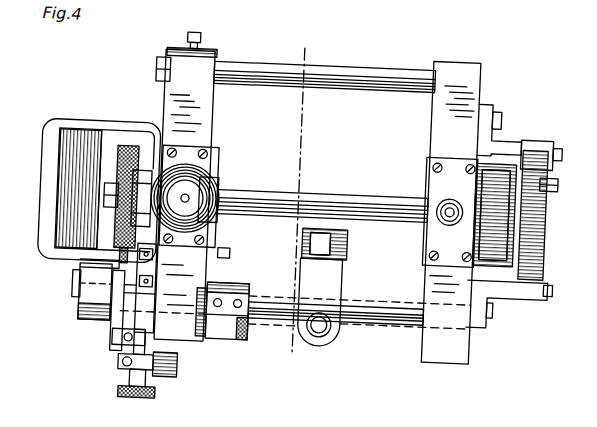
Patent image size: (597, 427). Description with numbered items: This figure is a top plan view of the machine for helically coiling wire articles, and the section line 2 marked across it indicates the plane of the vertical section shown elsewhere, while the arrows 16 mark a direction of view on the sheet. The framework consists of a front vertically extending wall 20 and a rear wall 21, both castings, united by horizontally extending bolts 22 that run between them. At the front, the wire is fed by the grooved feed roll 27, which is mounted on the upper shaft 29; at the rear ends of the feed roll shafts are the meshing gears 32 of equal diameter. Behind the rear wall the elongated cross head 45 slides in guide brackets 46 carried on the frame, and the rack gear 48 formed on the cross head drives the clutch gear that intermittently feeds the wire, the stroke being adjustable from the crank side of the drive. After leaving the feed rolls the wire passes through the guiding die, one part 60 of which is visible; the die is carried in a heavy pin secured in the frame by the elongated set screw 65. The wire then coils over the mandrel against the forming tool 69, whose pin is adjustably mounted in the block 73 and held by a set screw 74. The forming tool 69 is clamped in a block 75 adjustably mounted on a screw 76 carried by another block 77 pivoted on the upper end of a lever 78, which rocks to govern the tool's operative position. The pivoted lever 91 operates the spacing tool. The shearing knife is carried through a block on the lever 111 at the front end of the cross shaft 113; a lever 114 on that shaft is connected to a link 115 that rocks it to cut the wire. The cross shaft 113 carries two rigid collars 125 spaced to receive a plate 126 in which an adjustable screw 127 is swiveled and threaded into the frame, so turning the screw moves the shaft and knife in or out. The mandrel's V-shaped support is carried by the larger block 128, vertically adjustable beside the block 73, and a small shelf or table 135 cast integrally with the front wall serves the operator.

The section line 2— 2 is at (311, 50).
The direction arrows 16 is at (228, 274).
The front vertically extending wall 20 is at (161, 58).
The rear wall 21 is at (478, 69).
The horizontally extending bolts 22 is at (367, 75).
The feed roll 27 is at (118, 160).
The upper shaft 29 is at (343, 198).
The meshing gears 32 is at (489, 157).
The elongated cross head 45 is at (541, 202).
The guide brackets 46 is at (543, 132).
The rack gear 48 is at (557, 176).
The guiding die part 60 is at (120, 256).
The elongated set screw 65 is at (190, 43).
The forming tool 69 is at (112, 266).
The block 73 is at (158, 286).
The set screw 74 is at (159, 298).
The block 75 is at (118, 345).
The screw 76 is at (134, 363).
The block 77 is at (157, 384).
The lever 78 is at (184, 380).
The lever 91 is at (232, 257).
The lever 111 is at (85, 319).
The cross shaft 113 is at (377, 316).
The lever 114 is at (331, 341).
The link 115 is at (334, 249).
The collars 125 is at (244, 290).
The plate 126 is at (236, 336).
The adjustable screw 127 is at (246, 335).
The block 128 is at (155, 258).
The shelf or table 135 is at (71, 122).